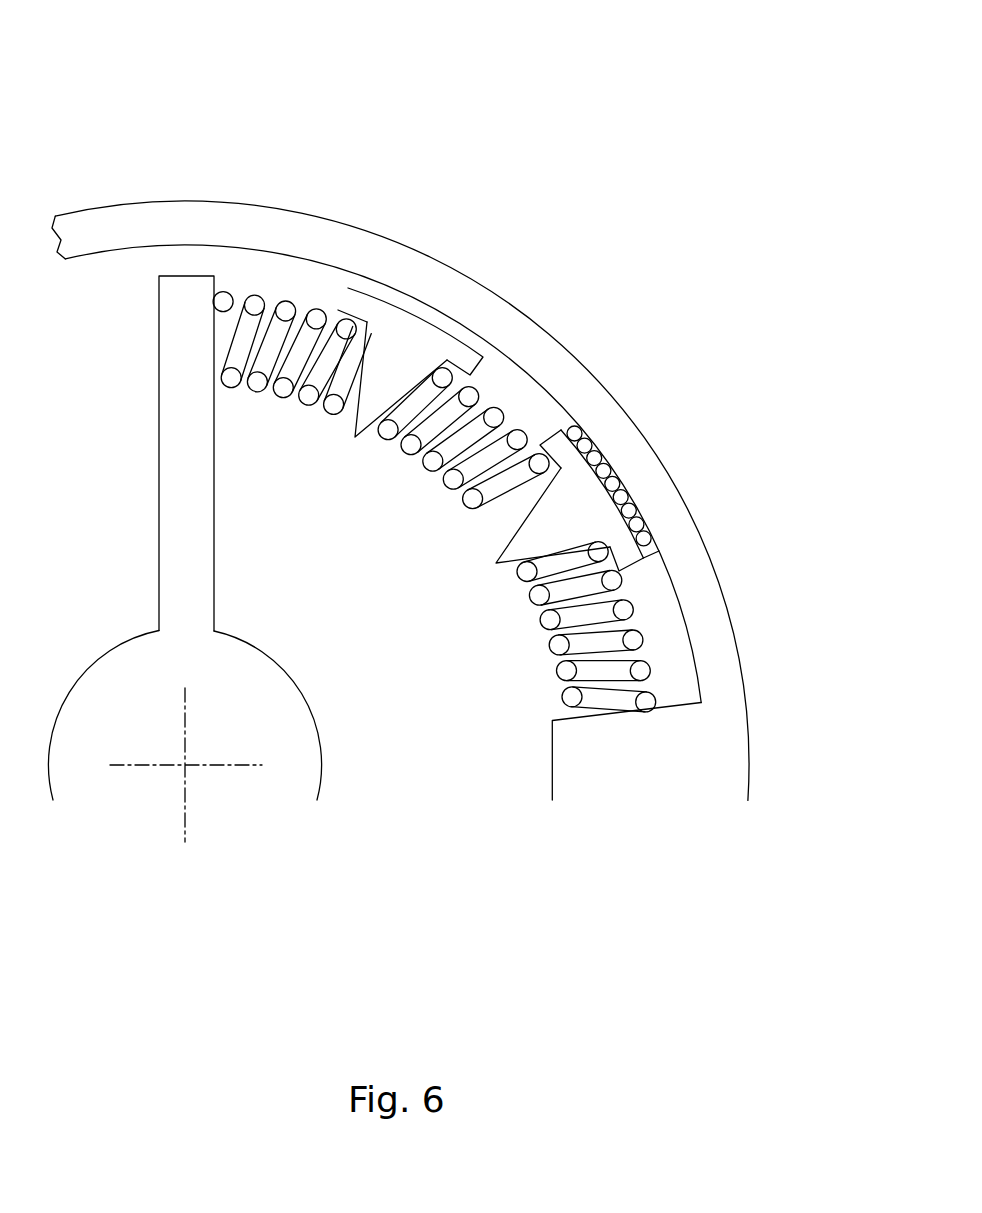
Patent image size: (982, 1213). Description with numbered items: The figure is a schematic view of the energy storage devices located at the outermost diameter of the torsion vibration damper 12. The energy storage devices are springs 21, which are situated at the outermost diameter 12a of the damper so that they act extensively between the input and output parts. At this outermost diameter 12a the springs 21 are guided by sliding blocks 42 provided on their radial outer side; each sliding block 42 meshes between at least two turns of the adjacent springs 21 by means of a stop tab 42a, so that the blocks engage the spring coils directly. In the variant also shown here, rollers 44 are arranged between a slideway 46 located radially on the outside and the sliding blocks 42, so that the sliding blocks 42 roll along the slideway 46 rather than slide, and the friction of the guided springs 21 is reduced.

The torsion vibration damper 12 is at (703, 133).
The outermost diameter 12a is at (320, 243).
The springs 21 is at (273, 338).
The sliding blocks 42 is at (390, 323).
The stop tab 42a is at (380, 393).
The rollers 44 is at (610, 482).
The slideway 46 is at (565, 405).